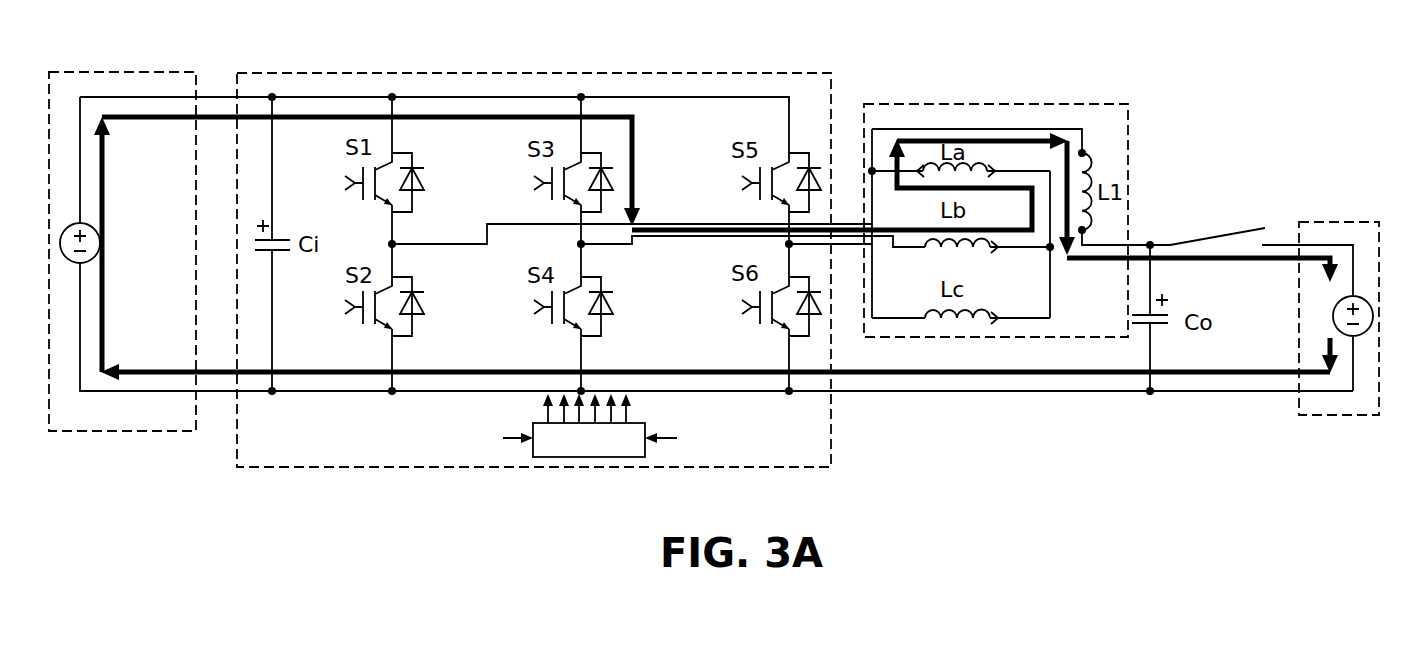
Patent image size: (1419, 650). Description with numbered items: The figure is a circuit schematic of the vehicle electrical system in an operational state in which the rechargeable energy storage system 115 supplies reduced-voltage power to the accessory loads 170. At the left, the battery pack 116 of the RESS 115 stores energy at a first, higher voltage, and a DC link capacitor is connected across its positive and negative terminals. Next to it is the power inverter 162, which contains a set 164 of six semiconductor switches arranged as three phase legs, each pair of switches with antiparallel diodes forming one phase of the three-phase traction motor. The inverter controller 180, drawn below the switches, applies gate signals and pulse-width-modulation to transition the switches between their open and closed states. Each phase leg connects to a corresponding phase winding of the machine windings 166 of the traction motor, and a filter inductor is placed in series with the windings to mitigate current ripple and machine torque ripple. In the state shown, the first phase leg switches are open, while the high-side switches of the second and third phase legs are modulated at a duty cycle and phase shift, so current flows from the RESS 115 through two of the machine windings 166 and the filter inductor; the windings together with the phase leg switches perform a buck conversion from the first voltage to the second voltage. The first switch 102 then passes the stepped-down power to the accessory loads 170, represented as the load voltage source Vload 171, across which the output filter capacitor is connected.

The rechargeable energy storage system 115 is at (118, 72).
The battery pack 116 is at (86, 222).
The set of semiconductor switches 164 is at (422, 66).
The power inverter 162 is at (558, 66).
The machine windings 166 is at (1138, 111).
The first switch 102 is at (1218, 230).
The accessory loads 170 is at (1337, 222).
The Vload 171 is at (1356, 296).
The inverter controller 180 is at (590, 426).